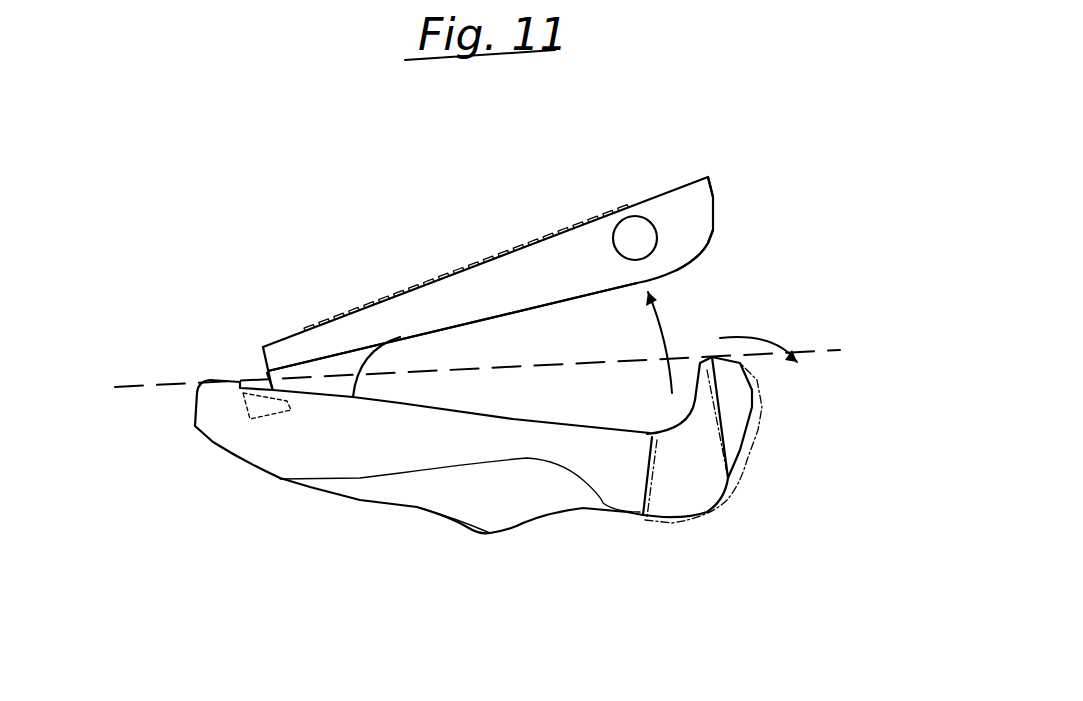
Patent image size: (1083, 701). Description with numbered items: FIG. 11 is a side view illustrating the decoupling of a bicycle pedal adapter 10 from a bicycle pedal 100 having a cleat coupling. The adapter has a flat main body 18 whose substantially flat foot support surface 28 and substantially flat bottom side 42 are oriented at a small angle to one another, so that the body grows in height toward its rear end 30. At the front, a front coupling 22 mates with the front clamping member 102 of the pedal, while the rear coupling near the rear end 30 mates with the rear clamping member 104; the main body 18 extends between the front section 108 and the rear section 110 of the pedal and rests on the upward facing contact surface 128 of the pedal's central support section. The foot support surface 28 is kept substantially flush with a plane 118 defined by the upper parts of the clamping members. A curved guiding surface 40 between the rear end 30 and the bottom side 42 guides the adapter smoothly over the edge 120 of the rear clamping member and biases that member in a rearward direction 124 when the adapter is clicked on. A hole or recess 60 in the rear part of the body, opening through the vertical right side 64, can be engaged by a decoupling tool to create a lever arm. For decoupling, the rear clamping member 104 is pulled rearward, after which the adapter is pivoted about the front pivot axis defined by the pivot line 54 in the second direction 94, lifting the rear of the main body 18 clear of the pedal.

The tool 10 is at (334, 286).
The main body 18 is at (470, 311).
The front coupling 22 is at (338, 395).
The foot support surface 28 is at (640, 195).
The rear end 30 is at (712, 177).
The guiding surface 40 is at (710, 243).
The bottom side 42 is at (500, 307).
The pivot line 54 is at (273, 390).
The hole or recess 60 is at (635, 238).
The vertical right side 64 is at (553, 275).
The second direction 94 is at (658, 327).
The bicycle pedal 100 is at (352, 530).
The front clamping member 102 is at (209, 455).
The rear clamping member 104 is at (708, 430).
The front section 108 is at (243, 383).
The rear section 110 is at (695, 400).
The plane 118 is at (172, 385).
The edge 120 is at (702, 365).
The rearward direction 124 is at (763, 343).
The upward facing contact surface 128 is at (513, 423).